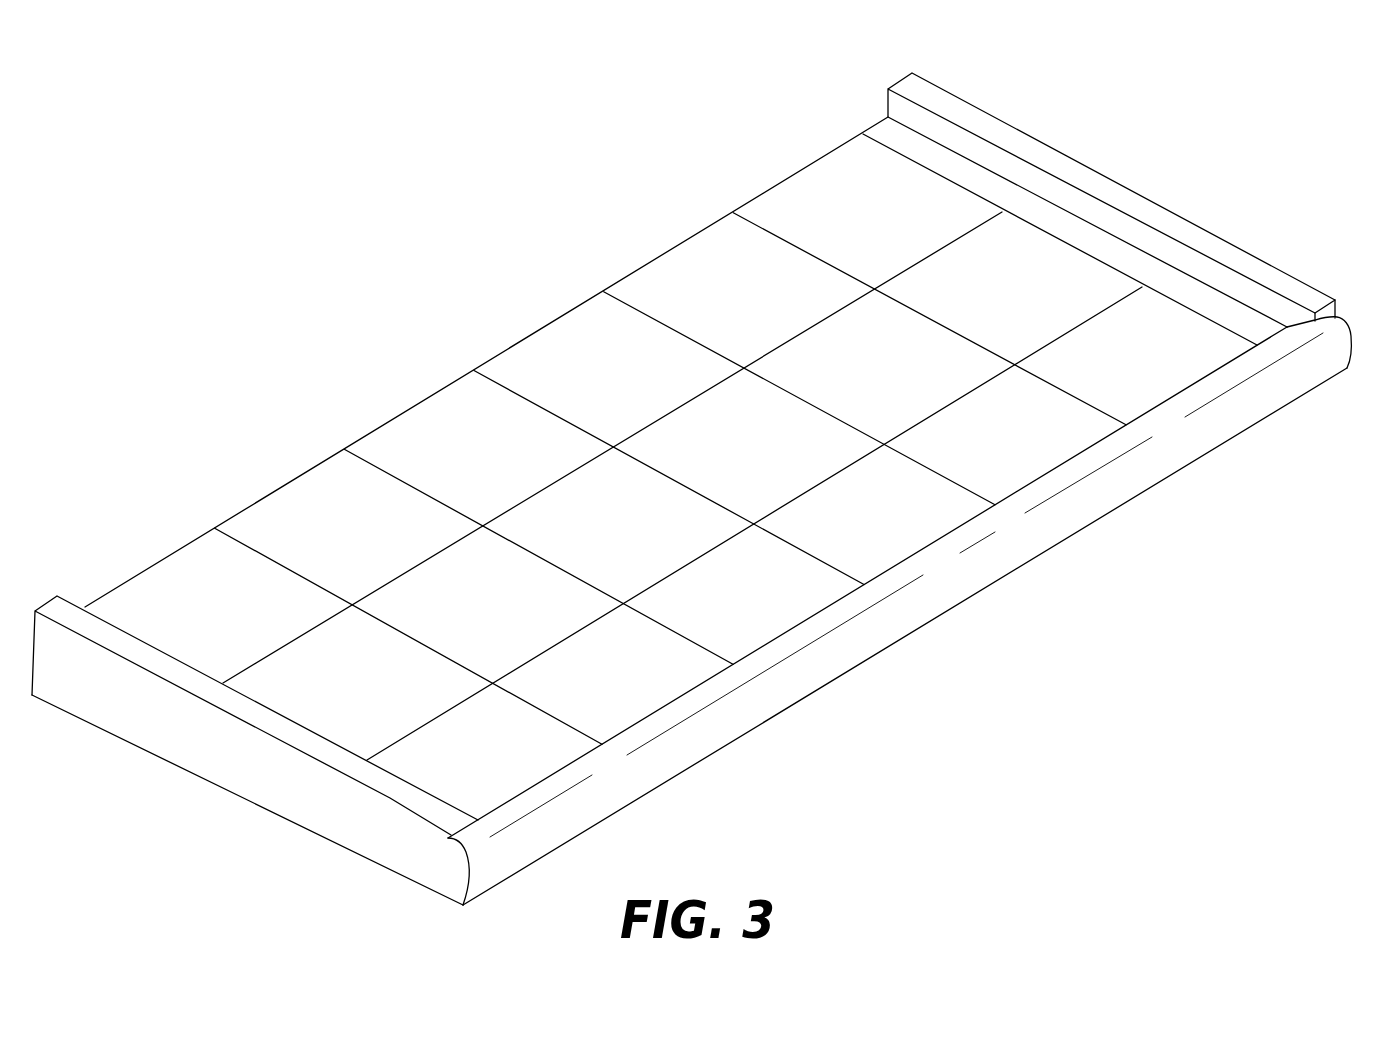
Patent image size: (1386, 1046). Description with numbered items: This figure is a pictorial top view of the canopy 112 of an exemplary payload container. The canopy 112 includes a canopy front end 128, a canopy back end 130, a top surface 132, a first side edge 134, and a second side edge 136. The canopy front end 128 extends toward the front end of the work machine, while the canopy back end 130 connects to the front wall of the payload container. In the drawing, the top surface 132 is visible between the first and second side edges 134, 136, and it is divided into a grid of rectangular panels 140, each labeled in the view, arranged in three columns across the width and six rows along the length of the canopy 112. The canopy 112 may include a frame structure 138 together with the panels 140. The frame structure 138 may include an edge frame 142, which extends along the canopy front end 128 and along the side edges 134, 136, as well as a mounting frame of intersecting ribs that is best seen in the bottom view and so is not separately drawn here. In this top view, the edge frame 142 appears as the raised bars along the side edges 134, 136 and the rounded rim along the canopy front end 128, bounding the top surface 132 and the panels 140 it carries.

The canopy 112 is at (702, 498).
The canopy front end 128 is at (1028, 602).
The canopy back end 130 is at (468, 343).
The top surface 132 is at (687, 272).
The first side edge 134 is at (1155, 193).
The second side edge 136 is at (272, 827).
The frame structure 138 is at (352, 830).
The panels 140 is at (891, 223).
The edge frame 142 is at (1330, 352).